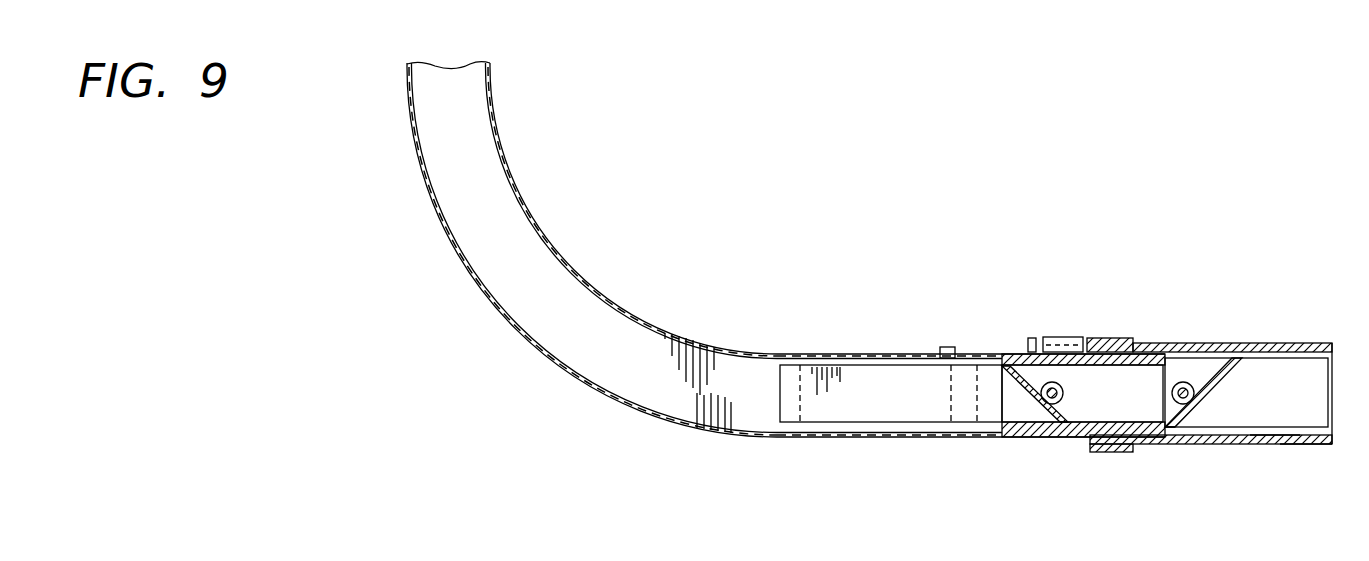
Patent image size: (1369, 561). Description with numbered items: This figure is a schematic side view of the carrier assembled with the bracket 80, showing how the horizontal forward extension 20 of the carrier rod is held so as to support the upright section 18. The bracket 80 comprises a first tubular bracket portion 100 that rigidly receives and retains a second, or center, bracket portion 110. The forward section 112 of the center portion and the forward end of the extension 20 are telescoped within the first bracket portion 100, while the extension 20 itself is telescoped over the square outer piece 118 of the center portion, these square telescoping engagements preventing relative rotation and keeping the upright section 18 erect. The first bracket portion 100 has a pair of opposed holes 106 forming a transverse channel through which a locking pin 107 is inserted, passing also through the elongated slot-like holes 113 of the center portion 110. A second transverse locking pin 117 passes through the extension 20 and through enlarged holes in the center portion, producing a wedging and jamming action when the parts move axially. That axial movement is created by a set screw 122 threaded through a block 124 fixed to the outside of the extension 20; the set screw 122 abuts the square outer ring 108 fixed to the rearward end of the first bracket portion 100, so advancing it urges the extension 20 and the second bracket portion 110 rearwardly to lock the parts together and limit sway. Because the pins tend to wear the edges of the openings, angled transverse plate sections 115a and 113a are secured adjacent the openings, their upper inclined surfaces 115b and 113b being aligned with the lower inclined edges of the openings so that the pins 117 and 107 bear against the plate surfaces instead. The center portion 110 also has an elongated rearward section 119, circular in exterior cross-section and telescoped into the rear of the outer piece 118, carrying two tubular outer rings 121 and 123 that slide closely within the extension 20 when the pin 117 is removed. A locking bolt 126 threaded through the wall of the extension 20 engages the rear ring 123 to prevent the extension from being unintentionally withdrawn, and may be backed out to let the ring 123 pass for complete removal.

The upright section 18 is at (493, 76).
The forward extension 20 is at (886, 440).
The bracket 80 is at (865, 243).
The first tubular bracket portion 100 is at (1290, 342).
The opposed holes 106 is at (1158, 445).
The locking pin 107 is at (1176, 384).
The square outer ring 108 is at (1103, 337).
The second bracket portion 110 is at (1298, 440).
The forward section 112 is at (1278, 445).
The holes 113 is at (1212, 412).
The angled transverse plate section 113a is at (1228, 378).
The upper inclined surface 113b is at (1225, 358).
The angled transverse plate section 115a is at (1022, 402).
The upper inclined surface 115b is at (1047, 385).
The second transverse locking pin 117 is at (1058, 406).
The outer piece 118 is at (1056, 428).
The rearward section 119 is at (872, 367).
The outer ring 121 is at (961, 438).
The set screw 122 is at (1030, 338).
The outer ring 123 is at (786, 355).
The block 124 is at (1067, 337).
The locking bolt 126 is at (946, 347).